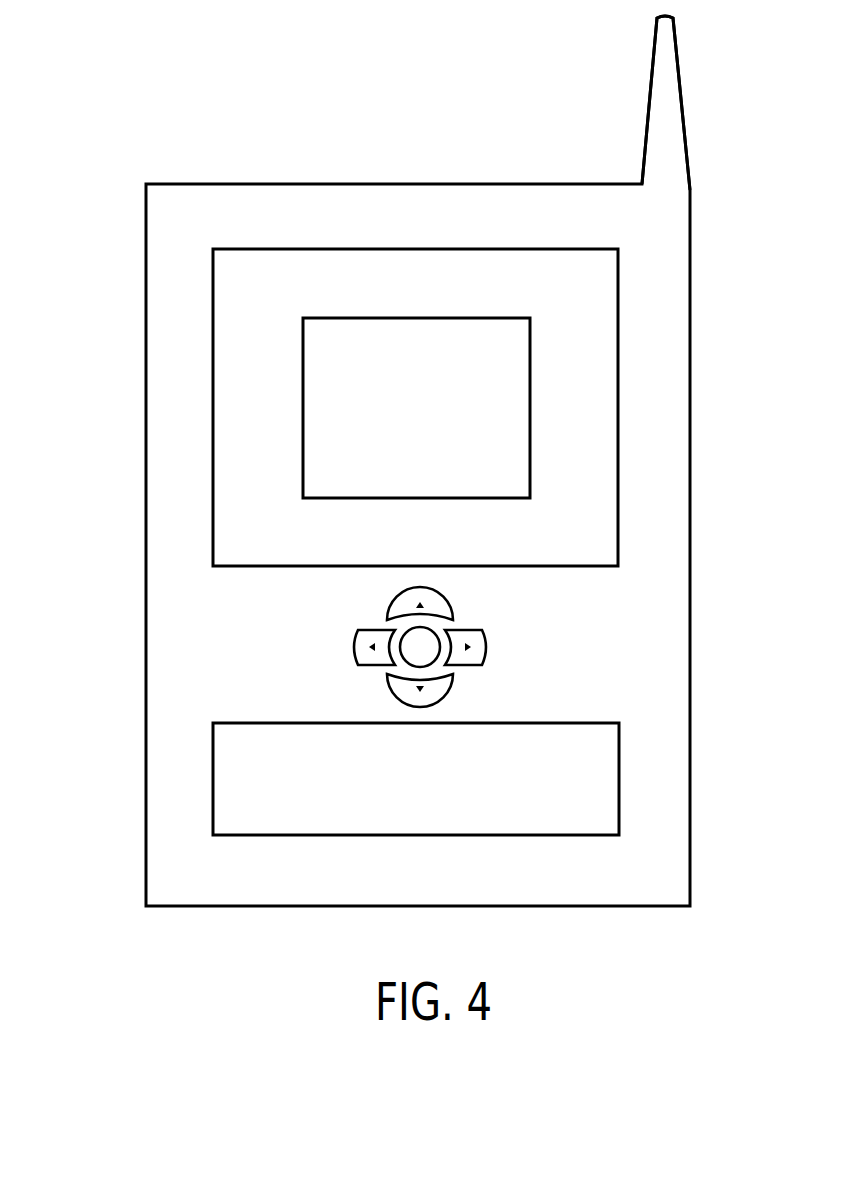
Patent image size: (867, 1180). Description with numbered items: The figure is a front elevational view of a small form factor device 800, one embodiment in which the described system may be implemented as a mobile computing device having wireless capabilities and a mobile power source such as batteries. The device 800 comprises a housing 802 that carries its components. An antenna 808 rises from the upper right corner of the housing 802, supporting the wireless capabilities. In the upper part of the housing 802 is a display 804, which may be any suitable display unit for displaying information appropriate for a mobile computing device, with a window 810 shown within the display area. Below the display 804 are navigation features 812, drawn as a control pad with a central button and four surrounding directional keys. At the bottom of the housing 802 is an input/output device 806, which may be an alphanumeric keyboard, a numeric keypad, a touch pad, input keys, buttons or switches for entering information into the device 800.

The small form factor device 800 is at (148, 123).
The housing 802 is at (146, 636).
The display 804 is at (620, 307).
The input/output (I/O) device 806 is at (620, 778).
The antenna 808 is at (650, 100).
The display window 810 is at (417, 318).
The navigation features 812 is at (518, 647).